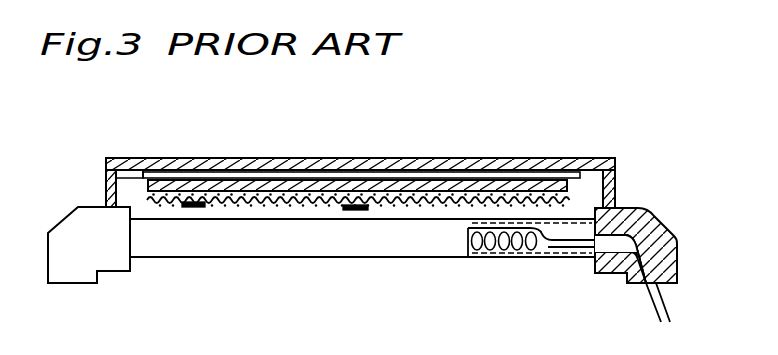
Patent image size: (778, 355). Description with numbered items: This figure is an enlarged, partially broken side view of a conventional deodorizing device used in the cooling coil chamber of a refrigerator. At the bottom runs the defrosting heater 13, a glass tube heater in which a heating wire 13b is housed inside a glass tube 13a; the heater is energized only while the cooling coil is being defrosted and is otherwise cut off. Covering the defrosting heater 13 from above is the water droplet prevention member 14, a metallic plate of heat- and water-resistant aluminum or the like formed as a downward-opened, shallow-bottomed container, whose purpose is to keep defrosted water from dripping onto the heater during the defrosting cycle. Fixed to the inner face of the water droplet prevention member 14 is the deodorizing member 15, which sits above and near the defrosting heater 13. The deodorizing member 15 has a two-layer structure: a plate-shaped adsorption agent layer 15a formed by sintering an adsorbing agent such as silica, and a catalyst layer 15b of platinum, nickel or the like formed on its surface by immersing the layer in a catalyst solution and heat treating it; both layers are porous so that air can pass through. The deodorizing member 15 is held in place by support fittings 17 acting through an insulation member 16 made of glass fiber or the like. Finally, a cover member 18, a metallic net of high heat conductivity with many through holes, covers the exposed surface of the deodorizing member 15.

The defrosting heater 13 is at (388, 258).
The glass tube 13a is at (490, 257).
The heating wire 13b is at (530, 257).
The water droplet prevention member 14 is at (562, 162).
The deodorizing member 15 is at (138, 180).
The adsorption agent layer 15a is at (235, 185).
The catalyst layer 15b is at (186, 178).
The insulation member 16 is at (437, 172).
The support fittings 17 is at (185, 206).
The cover member 18 is at (305, 203).